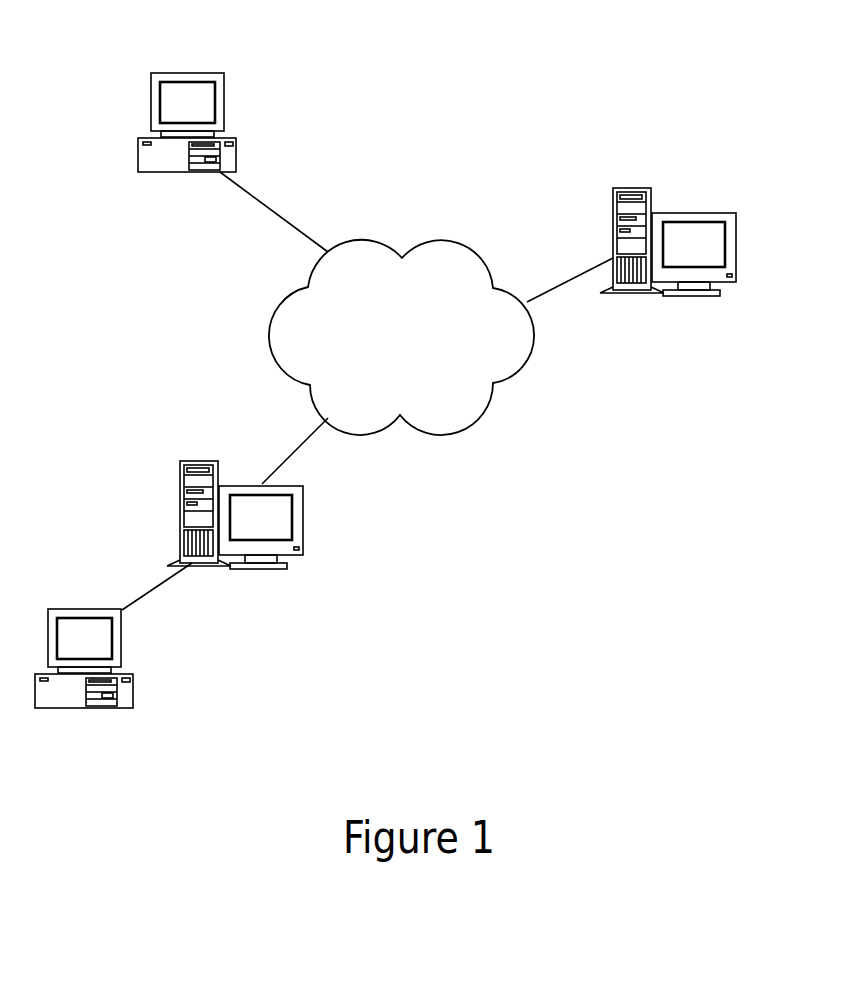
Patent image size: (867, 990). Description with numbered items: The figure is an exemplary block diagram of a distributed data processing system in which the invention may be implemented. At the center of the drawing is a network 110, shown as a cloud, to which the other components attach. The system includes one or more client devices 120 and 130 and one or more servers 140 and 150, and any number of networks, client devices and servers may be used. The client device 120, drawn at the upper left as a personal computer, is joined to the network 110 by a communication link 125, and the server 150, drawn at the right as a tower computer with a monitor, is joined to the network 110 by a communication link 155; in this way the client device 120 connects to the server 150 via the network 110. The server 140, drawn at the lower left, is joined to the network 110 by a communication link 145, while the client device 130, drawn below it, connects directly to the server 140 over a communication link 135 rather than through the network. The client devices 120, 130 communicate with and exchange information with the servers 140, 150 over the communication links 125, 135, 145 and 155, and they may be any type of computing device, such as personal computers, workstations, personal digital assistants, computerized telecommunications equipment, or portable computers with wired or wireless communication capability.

The network 110 is at (438, 435).
The client device 120 is at (188, 72).
The communication link 125 is at (303, 228).
The client device 130 is at (85, 708).
The communication link 135 is at (152, 595).
The server 140 is at (260, 563).
The communication link 145 is at (277, 467).
The server 150 is at (628, 186).
The communication link 155 is at (558, 283).